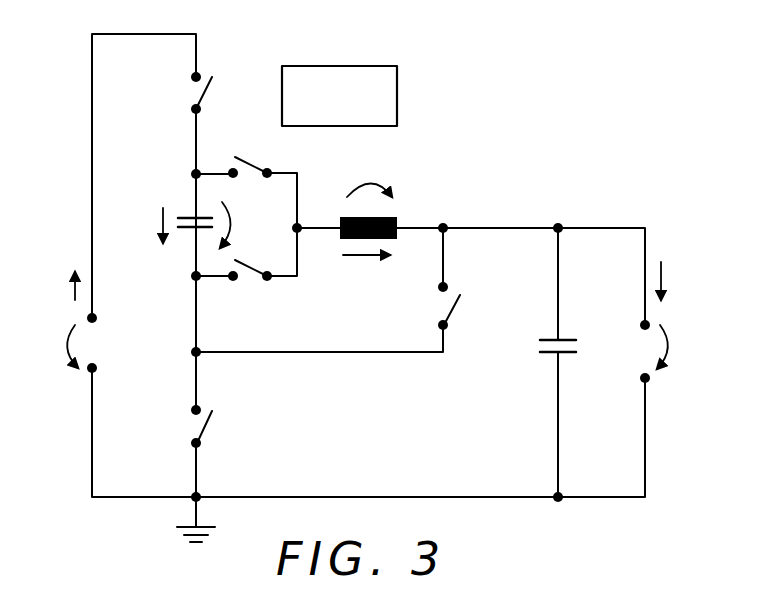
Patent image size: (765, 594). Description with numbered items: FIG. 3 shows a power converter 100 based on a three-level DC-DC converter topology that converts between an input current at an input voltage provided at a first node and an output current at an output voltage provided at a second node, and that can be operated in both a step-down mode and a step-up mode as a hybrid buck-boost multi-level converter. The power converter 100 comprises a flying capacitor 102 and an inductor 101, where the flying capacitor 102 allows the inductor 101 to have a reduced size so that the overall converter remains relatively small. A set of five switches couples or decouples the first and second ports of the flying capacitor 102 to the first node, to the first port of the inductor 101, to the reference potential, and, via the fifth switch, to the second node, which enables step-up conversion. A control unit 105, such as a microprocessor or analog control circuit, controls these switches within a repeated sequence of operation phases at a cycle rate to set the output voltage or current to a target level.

The power converter 100 is at (504, 115).
The inductor 101 is at (400, 218).
The flying capacitor 102 is at (192, 213).
The control unit 105 is at (398, 88).